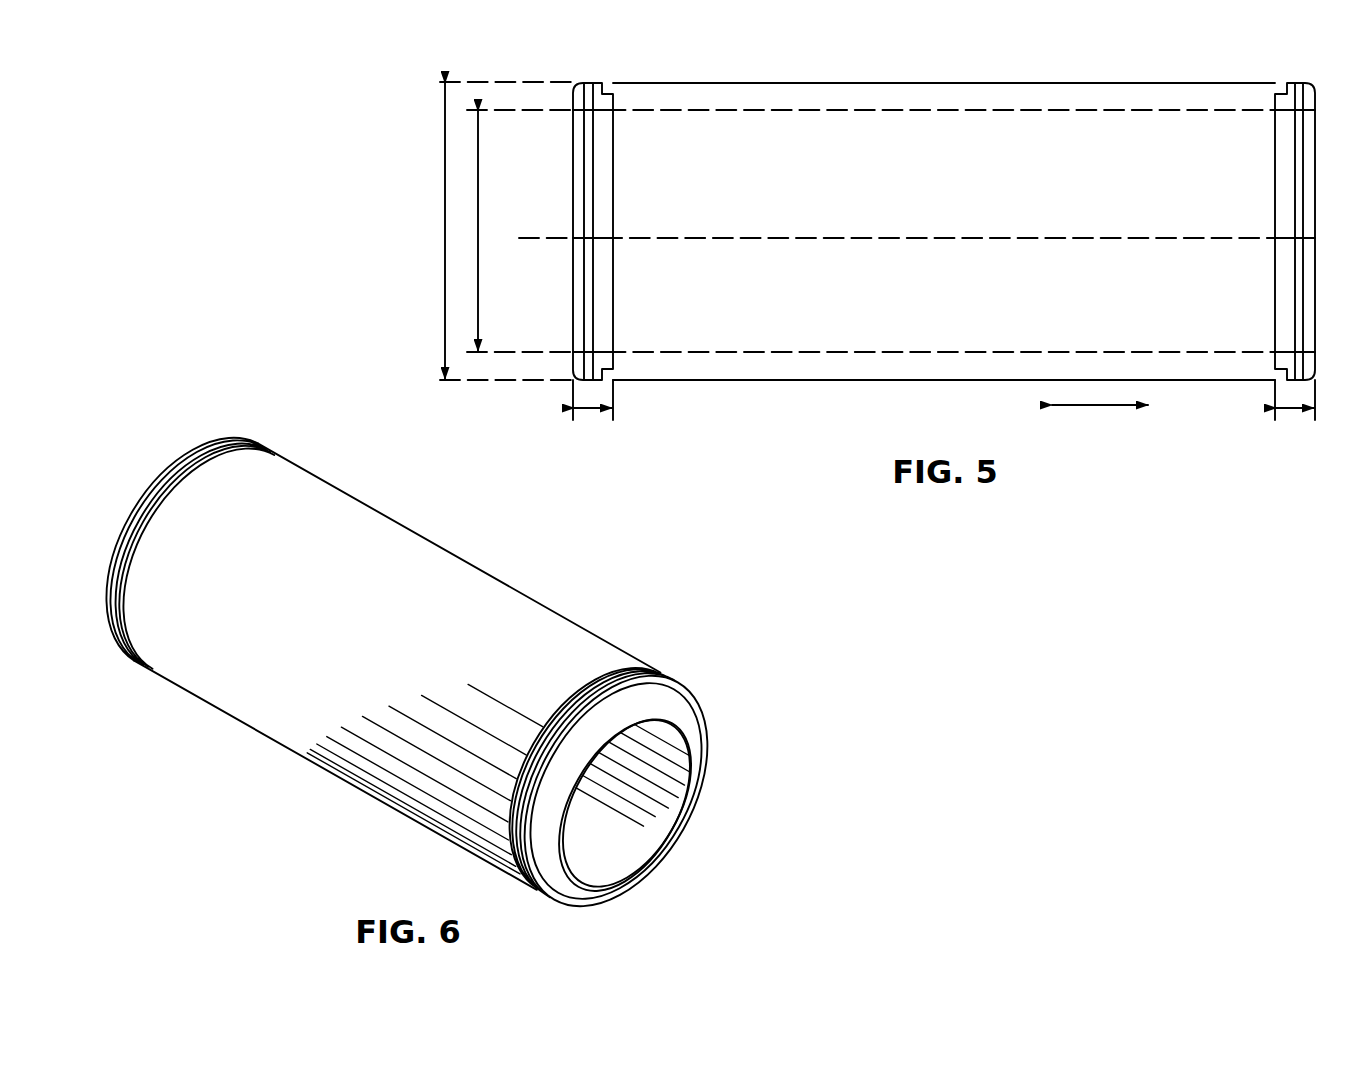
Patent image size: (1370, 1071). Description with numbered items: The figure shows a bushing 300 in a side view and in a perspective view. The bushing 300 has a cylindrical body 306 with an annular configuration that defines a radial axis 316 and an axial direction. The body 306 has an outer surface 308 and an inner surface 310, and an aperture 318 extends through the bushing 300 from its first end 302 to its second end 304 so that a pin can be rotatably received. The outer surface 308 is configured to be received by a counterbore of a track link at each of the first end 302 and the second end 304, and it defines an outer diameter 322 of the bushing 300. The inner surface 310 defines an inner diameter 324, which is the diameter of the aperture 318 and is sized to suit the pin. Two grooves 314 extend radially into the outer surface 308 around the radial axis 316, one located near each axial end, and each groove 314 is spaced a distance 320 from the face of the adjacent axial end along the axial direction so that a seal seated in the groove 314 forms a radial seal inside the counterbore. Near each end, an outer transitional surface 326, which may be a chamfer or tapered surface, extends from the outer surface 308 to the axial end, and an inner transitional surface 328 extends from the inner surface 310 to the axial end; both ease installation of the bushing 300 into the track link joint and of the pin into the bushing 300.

In FIG. 5, the bushing 300 is at (500, 47).
In FIG. 6, the bushing 300 is at (186, 375).
In FIG. 5, the first end 302 is at (573, 172).
In FIG. 6, the first end 302 is at (183, 457).
In FIG. 5, the second end 304 is at (1320, 96).
In FIG. 6, the second end 304 is at (488, 660).
In FIG. 5, the body 306 is at (871, 203).
In FIG. 6, the body 306 is at (397, 666).
In FIG. 5, the outer surface 308 is at (1010, 83).
In FIG. 6, the outer surface 308 is at (375, 512).
In FIG. 5, the inner surface 310 is at (886, 110).
In FIG. 6, the inner surface 310 is at (649, 811).
In FIG. 5, the groove 314 is at (931, 205).
In FIG. 6, the groove 314 is at (442, 660).
In FIG. 5, the radial axis 316 is at (1340, 238).
In FIG. 5, the aperture 318 is at (572, 268).
In FIG. 6, the aperture 318 is at (642, 799).
In FIG. 5, the distance 320 is at (590, 412).
In FIG. 5, the outer diameter 322 is at (445, 196).
In FIG. 5, the inner diameter 324 is at (480, 318).
In FIG. 6, the outer transitional surface 326 is at (692, 700).
In FIG. 6, the inner transitional surface 328 is at (598, 878).